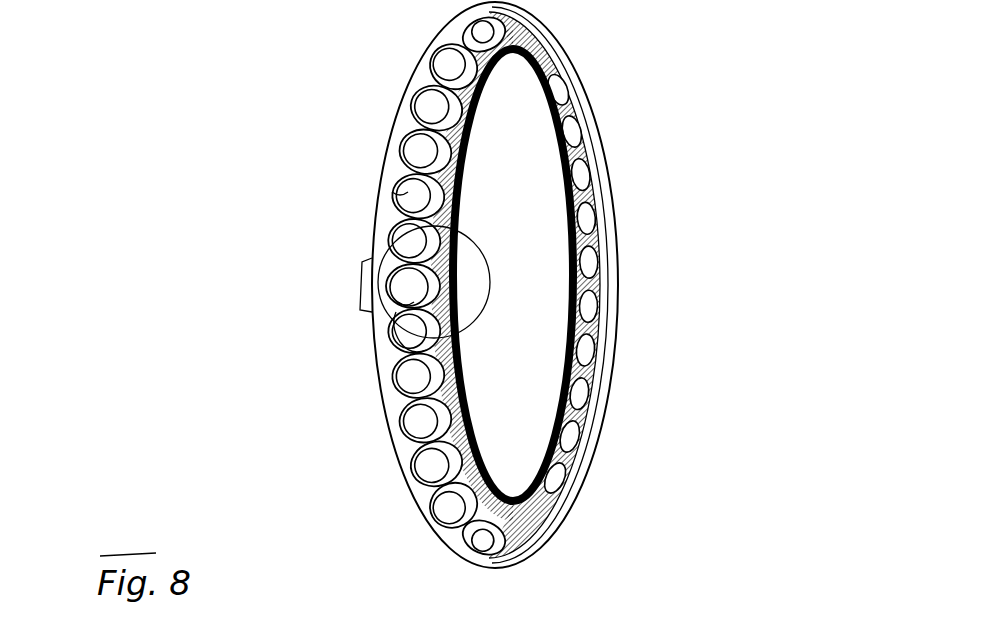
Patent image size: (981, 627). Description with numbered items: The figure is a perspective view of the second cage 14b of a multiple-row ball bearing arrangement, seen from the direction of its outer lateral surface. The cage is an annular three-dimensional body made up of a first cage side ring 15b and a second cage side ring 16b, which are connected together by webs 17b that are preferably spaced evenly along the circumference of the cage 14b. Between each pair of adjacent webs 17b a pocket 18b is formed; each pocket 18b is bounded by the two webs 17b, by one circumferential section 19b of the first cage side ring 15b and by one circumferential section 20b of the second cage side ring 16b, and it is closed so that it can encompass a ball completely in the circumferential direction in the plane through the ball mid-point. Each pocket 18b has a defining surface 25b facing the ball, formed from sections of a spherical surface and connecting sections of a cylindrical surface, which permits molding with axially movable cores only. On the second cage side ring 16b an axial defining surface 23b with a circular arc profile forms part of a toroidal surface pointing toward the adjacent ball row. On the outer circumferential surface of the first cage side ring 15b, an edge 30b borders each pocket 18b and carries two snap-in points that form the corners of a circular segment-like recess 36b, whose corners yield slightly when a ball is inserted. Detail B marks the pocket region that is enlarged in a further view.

The second cage 14b is at (367, 80).
The first cage side ring 15b is at (378, 158).
The axial defining surface 23b is at (583, 78).
The defining surface 25b is at (478, 133).
The second cage side ring 16b is at (593, 455).
The edge 30b is at (410, 252).
The recess 36b is at (392, 198).
The detail B is at (474, 242).
The pocket 18b is at (430, 285).
The circumferential section of the second cage side ring 20b is at (400, 284).
The webs 17b is at (420, 317).
The circumferential section of the first cage side ring 19b is at (360, 285).